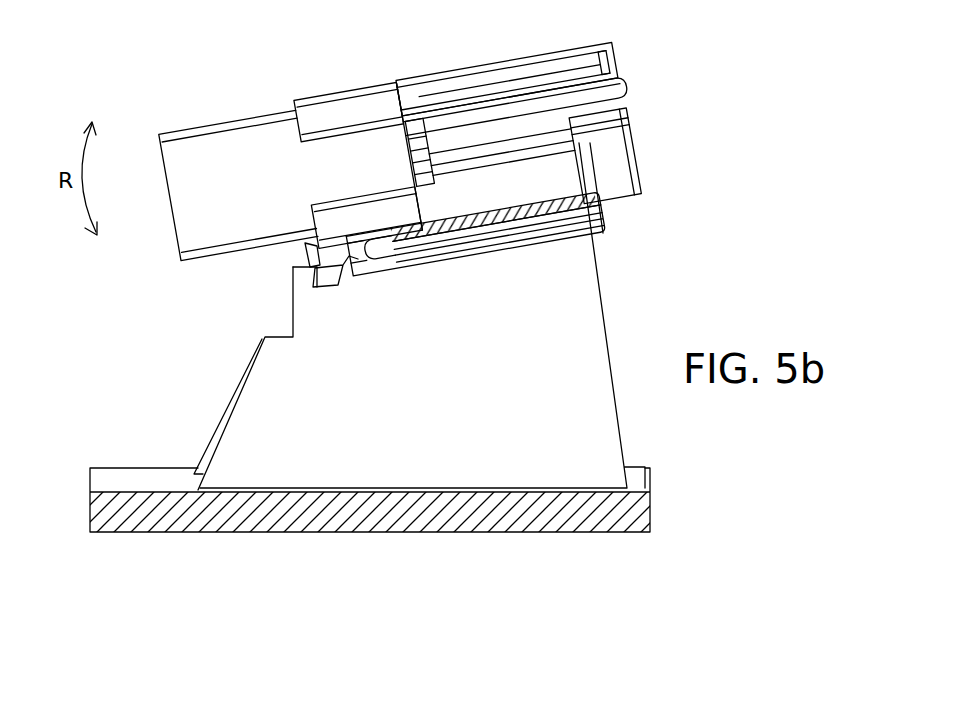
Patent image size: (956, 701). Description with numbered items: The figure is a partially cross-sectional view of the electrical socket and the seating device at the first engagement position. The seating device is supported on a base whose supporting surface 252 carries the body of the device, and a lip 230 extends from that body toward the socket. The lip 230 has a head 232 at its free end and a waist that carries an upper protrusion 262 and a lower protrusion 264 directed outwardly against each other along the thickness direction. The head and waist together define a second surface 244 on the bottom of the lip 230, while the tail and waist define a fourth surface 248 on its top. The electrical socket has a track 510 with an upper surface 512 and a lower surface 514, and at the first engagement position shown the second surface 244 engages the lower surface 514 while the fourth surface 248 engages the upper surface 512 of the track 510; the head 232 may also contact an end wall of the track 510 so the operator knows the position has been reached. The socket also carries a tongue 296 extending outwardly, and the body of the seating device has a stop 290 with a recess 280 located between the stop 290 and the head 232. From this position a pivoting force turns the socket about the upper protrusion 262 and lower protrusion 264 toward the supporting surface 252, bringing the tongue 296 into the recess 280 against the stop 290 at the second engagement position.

The lower surface 514 is at (457, 232).
The upper protrusion 262 is at (497, 214).
The fourth surface 248 is at (532, 212).
The track 510 is at (600, 208).
The upper surface 512 is at (515, 228).
The lower protrusion 264 is at (502, 232).
The lip 230 is at (483, 242).
The second surface 244 is at (442, 247).
The head 232 is at (410, 252).
The recess 280 is at (325, 287).
The stop 290 is at (308, 278).
The tongue 296 is at (308, 256).
The supporting surface 252 is at (124, 477).